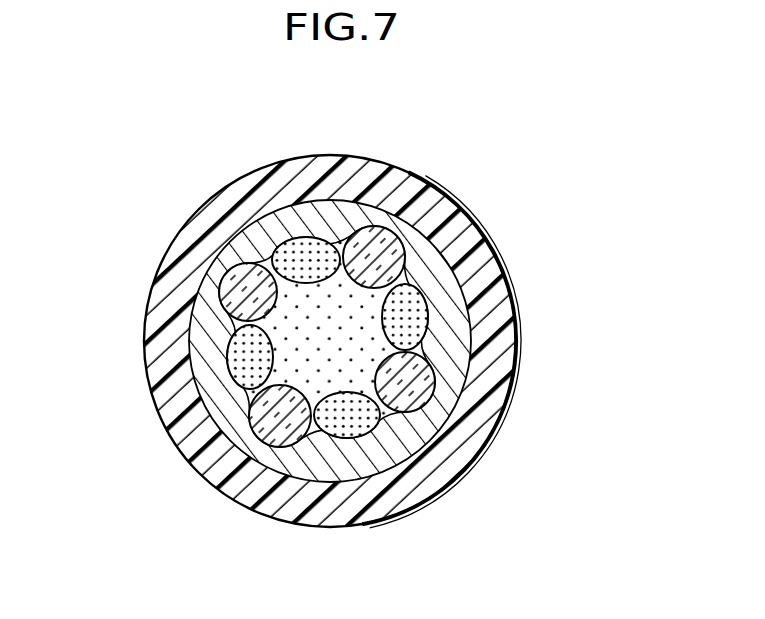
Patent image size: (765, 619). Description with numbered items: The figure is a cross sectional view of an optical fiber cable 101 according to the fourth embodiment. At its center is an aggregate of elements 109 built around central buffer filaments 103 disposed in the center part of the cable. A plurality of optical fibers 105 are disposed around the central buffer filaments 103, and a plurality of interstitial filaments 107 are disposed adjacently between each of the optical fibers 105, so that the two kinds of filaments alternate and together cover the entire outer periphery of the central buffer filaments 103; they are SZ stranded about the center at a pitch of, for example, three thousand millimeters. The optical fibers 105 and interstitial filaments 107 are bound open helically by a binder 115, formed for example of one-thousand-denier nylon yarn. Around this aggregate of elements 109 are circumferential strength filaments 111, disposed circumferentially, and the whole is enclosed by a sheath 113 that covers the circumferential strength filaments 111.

The optical fiber cable 101 is at (523, 160).
The central buffer filaments 103 is at (358, 357).
The optical fibers 105 is at (374, 255).
The interstitial filaments 107 is at (307, 256).
The aggregate of elements 109 is at (341, 228).
The circumferential strength filaments 111 is at (405, 433).
The sheath 113 is at (483, 285).
The binder 115 is at (247, 250).